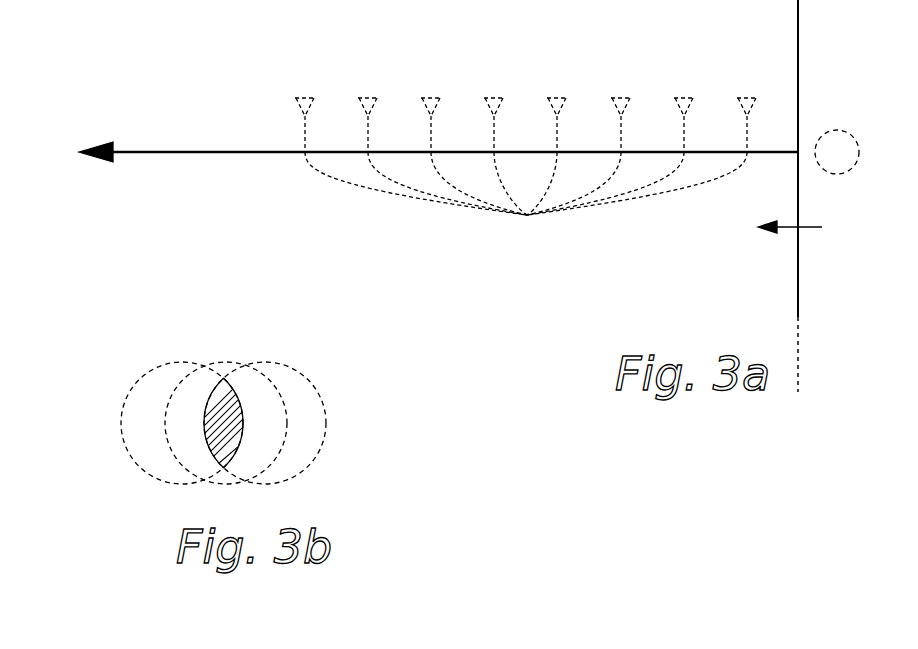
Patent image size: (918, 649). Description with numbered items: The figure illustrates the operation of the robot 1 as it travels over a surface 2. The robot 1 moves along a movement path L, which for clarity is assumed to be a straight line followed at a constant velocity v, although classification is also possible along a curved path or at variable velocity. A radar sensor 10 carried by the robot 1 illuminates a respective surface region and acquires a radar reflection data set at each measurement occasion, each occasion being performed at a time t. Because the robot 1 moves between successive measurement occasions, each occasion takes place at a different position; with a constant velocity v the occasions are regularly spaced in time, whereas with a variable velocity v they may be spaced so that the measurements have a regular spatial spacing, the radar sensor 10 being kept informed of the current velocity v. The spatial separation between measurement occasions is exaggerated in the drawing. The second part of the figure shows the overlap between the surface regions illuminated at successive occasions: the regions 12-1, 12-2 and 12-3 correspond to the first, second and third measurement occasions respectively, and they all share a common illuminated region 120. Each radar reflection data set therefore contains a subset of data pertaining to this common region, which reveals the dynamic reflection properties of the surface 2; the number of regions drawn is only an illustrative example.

In FIG. 3A, the robot 1 is at (797, 40).
In FIG. 3A, the radar sensor 10 is at (839, 130).
In FIG. 3A, the surface 2 is at (678, 258).
In FIG. 3A, the movement path L is at (153, 153).
In FIG. 3A, the time of measurement occasion t is at (526, 234).
In FIG. 3A, the velocity v is at (783, 218).
In FIG. 3B, the surface region illuminated at first measurement occasion 12-1 is at (320, 452).
In FIG. 3B, the surface region illuminated at second measurement occasion 12-2 is at (227, 362).
In FIG. 3B, the surface region illuminated at third measurement occasion 12-3 is at (136, 463).
In FIG. 3B, the common illuminated region 120 is at (208, 392).